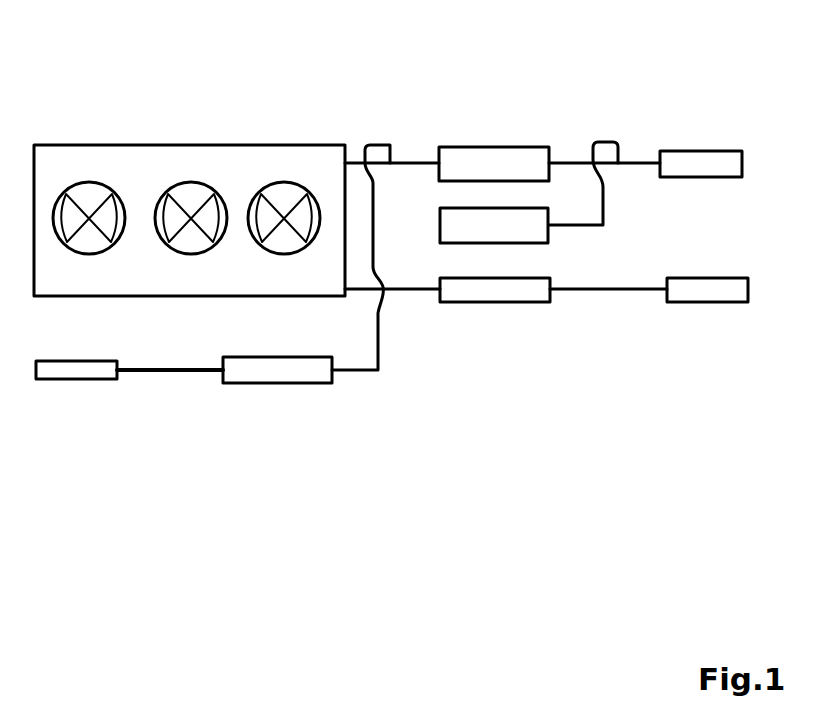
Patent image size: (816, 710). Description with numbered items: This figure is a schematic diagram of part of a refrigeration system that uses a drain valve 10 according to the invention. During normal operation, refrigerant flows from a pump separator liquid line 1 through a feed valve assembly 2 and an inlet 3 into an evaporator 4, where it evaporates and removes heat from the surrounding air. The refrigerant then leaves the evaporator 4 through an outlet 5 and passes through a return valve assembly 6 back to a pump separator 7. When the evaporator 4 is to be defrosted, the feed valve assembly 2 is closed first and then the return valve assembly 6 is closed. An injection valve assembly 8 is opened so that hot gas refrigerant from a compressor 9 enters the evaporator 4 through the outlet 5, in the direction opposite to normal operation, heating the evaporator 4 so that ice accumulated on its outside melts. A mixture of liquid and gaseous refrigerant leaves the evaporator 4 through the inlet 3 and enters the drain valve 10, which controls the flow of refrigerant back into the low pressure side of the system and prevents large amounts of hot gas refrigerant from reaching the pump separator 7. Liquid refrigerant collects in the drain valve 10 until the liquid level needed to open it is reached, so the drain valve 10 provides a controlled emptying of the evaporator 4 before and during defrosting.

The pump separator liquid line 1 is at (713, 290).
The feed valve assembly 2 is at (480, 290).
The inlet 3 is at (348, 296).
The evaporator 4 is at (152, 163).
The outlet 5 is at (347, 163).
The return valve assembly 6 is at (493, 162).
The pump separator 7 is at (700, 163).
The injection valve assembly 8 is at (275, 372).
The compressor 9 is at (85, 372).
The drain valve 10 is at (517, 232).